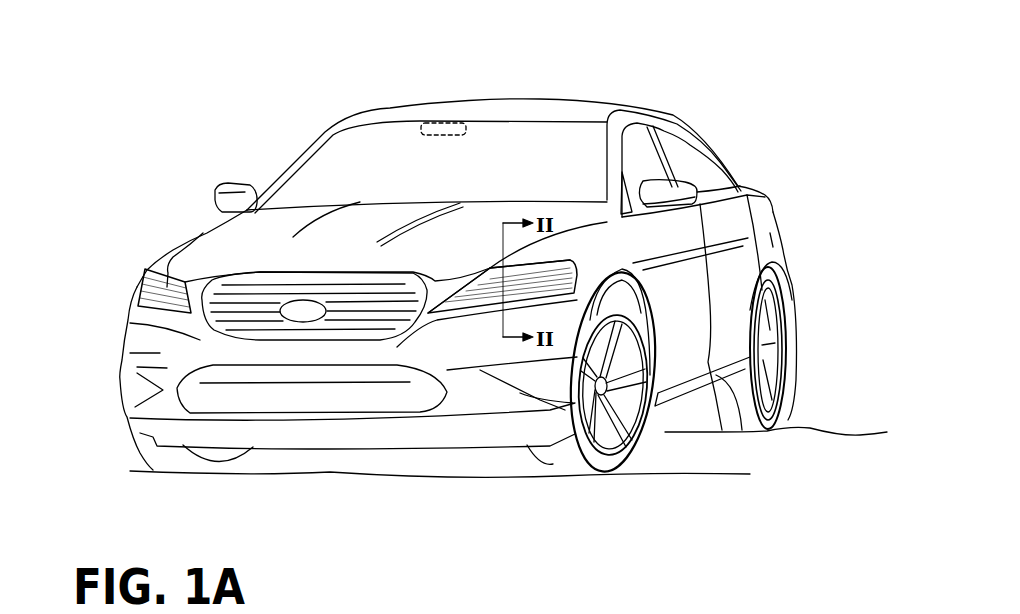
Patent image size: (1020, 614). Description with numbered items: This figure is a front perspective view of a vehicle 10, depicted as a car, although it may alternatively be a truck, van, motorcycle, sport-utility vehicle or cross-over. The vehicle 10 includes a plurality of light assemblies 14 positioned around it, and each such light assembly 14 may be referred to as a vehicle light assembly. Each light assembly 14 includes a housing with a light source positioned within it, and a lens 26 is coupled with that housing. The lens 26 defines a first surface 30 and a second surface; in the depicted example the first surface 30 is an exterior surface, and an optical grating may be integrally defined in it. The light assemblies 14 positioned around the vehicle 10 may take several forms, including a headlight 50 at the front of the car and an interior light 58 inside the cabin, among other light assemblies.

The vehicle 10 is at (627, 78).
The light assembly 14 is at (490, 270).
The lens 26 is at (577, 272).
The first surface 30 is at (490, 270).
The headlight 50 is at (141, 269).
The interior light 58 is at (437, 123).